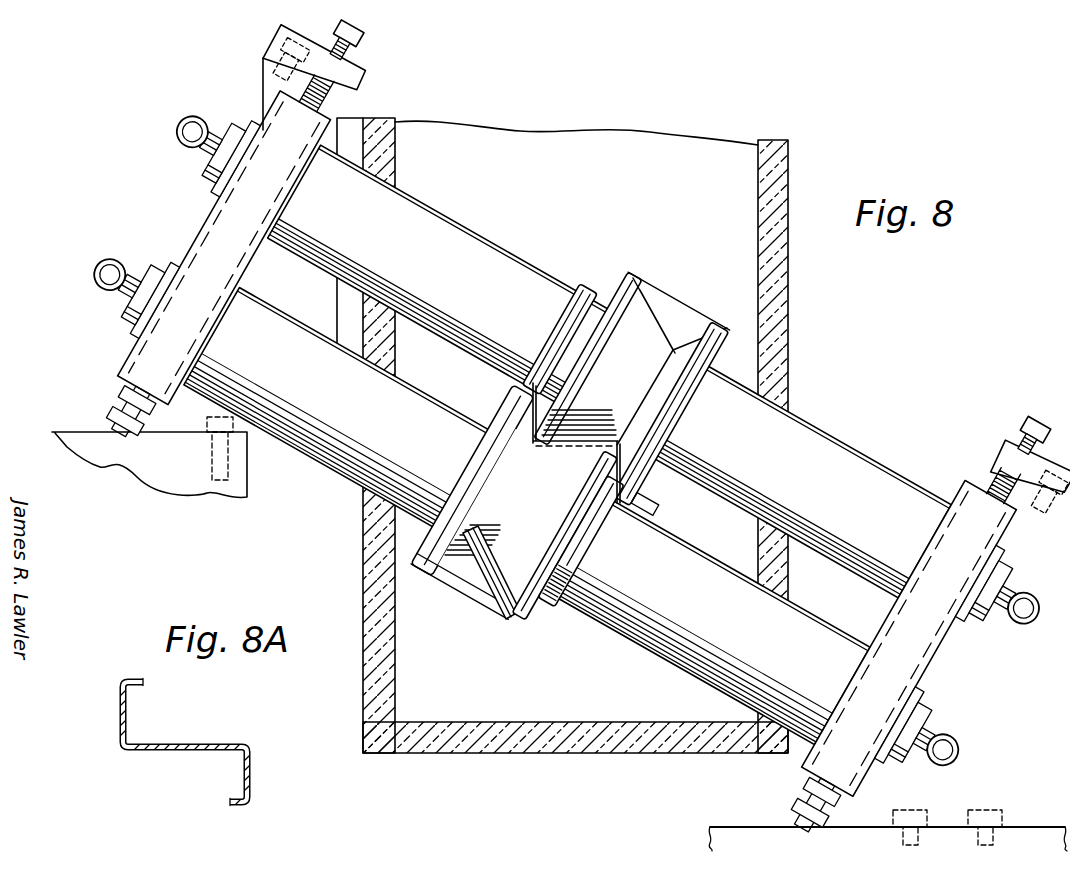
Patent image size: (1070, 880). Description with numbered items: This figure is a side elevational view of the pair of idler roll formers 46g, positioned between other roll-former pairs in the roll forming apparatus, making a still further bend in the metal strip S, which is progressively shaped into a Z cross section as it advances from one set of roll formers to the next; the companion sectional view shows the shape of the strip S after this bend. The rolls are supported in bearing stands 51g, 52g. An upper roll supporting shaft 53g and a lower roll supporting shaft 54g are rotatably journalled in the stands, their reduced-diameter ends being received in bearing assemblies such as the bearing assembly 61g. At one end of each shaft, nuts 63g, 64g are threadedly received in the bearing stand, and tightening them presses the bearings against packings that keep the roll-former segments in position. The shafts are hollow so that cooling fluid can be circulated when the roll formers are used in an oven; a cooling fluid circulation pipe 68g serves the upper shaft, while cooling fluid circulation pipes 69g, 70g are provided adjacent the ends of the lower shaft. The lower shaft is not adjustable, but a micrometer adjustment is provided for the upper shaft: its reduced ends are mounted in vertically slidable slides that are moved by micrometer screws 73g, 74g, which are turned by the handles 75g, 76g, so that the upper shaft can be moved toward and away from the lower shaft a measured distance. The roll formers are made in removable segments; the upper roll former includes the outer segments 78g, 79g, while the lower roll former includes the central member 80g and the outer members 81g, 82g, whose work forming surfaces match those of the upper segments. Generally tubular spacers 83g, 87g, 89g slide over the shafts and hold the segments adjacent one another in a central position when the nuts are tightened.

In FIG. 8, the idler roll formers 46g is at (668, 475).
In FIG. 8, the bearing stand 51g is at (933, 665).
In FIG. 8, the bearing stand 52g is at (205, 220).
In FIG. 8, the upper roll supporting shaft 53g is at (1000, 557).
In FIG. 8, the lower roll supporting shaft 54g is at (920, 695).
In FIG. 8, the bearing assembly 61g is at (176, 132).
In FIG. 8, the nut 63g is at (215, 166).
In FIG. 8, the nut 64g is at (128, 318).
In FIG. 8, the cooling fluid circulation pipe 68g is at (1020, 620).
In FIG. 8, the cooling fluid circulation pipe 69g is at (92, 268).
In FIG. 8, the cooling fluid circulation pipe 70g is at (956, 750).
In FIG. 8, the micrometer screw 73g is at (1015, 442).
In FIG. 8, the micrometer screw 74g is at (350, 58).
In FIG. 8, the handle 75g is at (1023, 420).
In FIG. 8, the handle 76g is at (365, 42).
In FIG. 8, the outer segment 78g is at (602, 290).
In FIG. 8, the outer segment 79g is at (648, 270).
In FIG. 8, the central member 80g is at (497, 593).
In FIG. 8, the outer member 81g is at (440, 570).
In FIG. 8, the outer member 82g is at (545, 598).
In FIG. 8, the tubular spacer 83g is at (459, 237).
In FIG. 8, the tubular spacer 87g is at (318, 456).
In FIG. 8, the tubular spacer 89g is at (647, 641).
In FIG. 8, the strip S is at (563, 450).
In FIG. 8A, the strip S is at (180, 752).